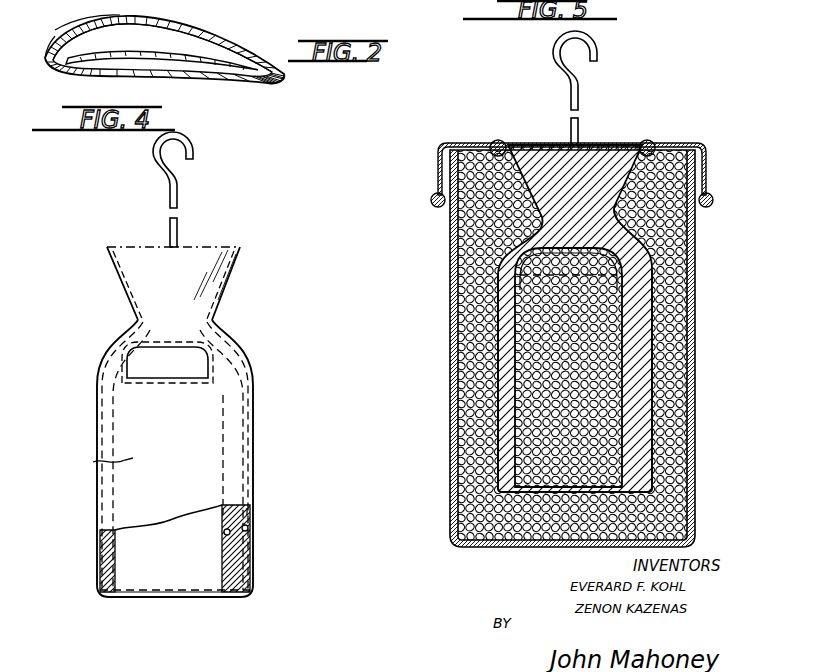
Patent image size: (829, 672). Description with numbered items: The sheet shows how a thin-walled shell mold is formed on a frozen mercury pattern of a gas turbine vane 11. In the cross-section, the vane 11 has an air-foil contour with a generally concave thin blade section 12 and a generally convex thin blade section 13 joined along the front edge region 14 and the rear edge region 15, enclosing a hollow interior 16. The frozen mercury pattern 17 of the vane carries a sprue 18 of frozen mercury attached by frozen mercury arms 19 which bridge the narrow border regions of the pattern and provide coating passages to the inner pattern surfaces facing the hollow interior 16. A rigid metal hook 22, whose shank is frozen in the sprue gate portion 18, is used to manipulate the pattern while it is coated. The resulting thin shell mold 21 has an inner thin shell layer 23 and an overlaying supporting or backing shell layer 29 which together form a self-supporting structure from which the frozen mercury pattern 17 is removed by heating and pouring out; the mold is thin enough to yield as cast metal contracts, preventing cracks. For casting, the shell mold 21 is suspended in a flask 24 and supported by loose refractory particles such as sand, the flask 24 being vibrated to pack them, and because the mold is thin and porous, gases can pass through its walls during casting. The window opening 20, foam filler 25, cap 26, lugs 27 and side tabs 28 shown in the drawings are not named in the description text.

In FIG. 2, the gas turbine vane 11 is at (70, 36).
In FIG. 2, the concave thin blade section 12 is at (139, 62).
In FIG. 2, the convex thin blade section 13 is at (252, 53).
In FIG. 2, the front edge region 14 is at (48, 57).
In FIG. 2, the rear edge region 15 is at (288, 78).
In FIG. 2, the hollow interior 16 is at (217, 45).
In FIG. 4, the hollow interior 16 is at (188, 603).
In FIG. 5, the hollow interior 16 is at (587, 470).
In FIG. 4, the frozen mercury pattern 17 is at (255, 563).
In FIG. 5, the frozen mercury pattern 17 is at (640, 312).
In FIG. 4, the sprue 18 is at (195, 262).
In FIG. 5, the sprue 18 is at (608, 157).
In FIG. 4, the frozen mercury arms 19 is at (115, 355).
In FIG. 4, the window opening 20 is at (185, 370).
In FIG. 5, the window opening 20 is at (557, 263).
In FIG. 4, the thin shell mold 21 is at (100, 465).
In FIG. 4, the rigid metal hook 22 is at (154, 160).
In FIG. 5, the rigid metal hook 22 is at (554, 58).
In FIG. 4, the inner thin shell layer 23 is at (248, 529).
In FIG. 5, the inner thin shell layer 23 is at (497, 447).
In FIG. 5, the flask 24 is at (490, 546).
In FIG. 5, the foam filler 25 is at (673, 367).
In FIG. 5, the cap 26 is at (700, 147).
In FIG. 5, the lug 27 is at (656, 150).
In FIG. 5, the side tab 28 is at (714, 200).
In FIG. 4, the supporting or backing shell layer 29 is at (223, 534).